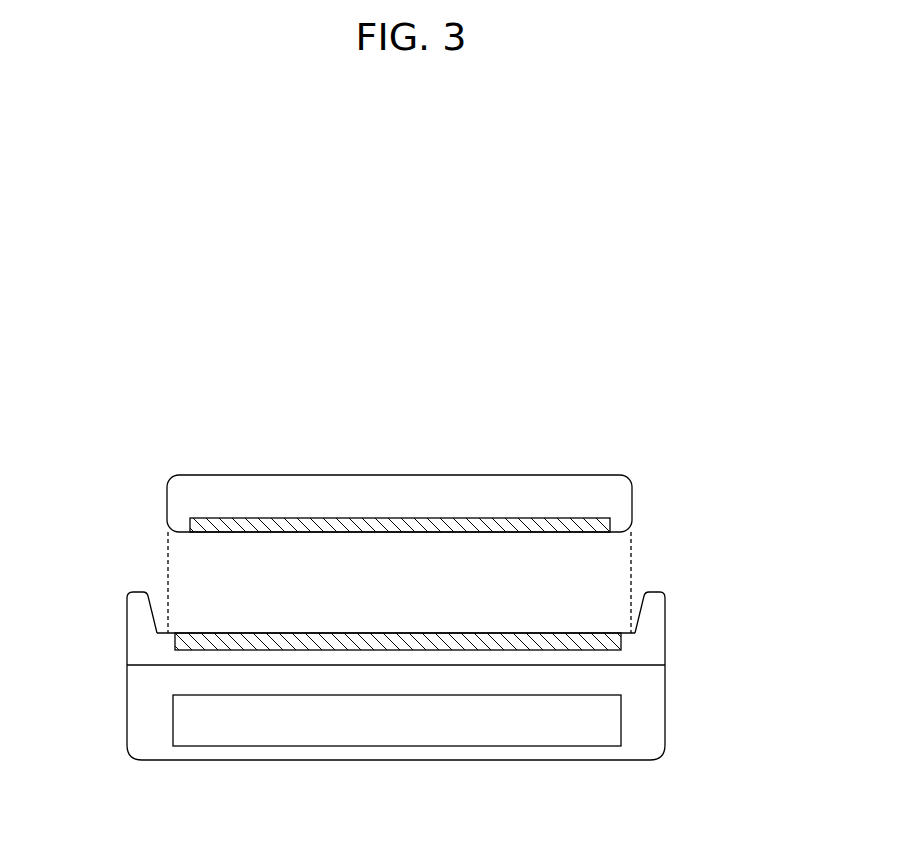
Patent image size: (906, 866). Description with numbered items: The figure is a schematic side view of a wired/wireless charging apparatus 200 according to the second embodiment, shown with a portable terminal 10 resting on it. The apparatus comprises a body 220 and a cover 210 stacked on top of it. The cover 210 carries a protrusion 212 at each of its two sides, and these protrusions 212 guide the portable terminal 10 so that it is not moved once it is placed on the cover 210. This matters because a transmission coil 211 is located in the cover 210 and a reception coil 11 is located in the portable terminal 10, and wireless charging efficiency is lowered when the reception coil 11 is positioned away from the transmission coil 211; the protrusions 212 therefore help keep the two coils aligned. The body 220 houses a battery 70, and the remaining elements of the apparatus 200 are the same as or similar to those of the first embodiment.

The portable terminal 10 is at (523, 475).
The reception coil 11 is at (404, 535).
The battery 70 is at (556, 735).
The wired/wireless charging apparatus 200 is at (408, 646).
The cover 210 is at (408, 621).
The transmission coil 211 is at (176, 641).
The protrusion 212 is at (138, 598).
The body 220 is at (439, 736).